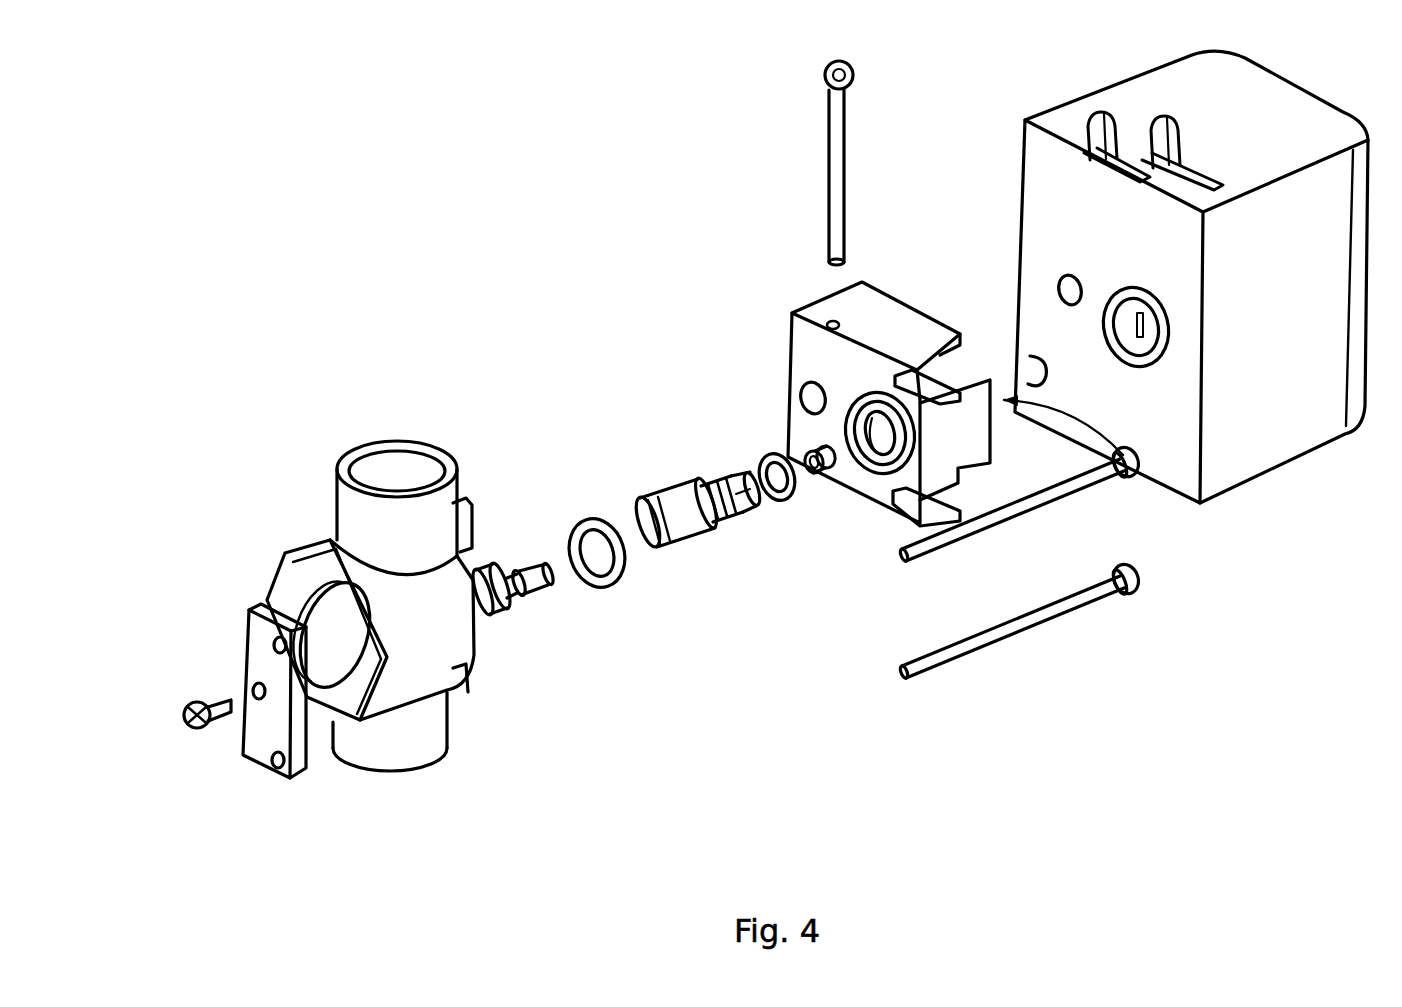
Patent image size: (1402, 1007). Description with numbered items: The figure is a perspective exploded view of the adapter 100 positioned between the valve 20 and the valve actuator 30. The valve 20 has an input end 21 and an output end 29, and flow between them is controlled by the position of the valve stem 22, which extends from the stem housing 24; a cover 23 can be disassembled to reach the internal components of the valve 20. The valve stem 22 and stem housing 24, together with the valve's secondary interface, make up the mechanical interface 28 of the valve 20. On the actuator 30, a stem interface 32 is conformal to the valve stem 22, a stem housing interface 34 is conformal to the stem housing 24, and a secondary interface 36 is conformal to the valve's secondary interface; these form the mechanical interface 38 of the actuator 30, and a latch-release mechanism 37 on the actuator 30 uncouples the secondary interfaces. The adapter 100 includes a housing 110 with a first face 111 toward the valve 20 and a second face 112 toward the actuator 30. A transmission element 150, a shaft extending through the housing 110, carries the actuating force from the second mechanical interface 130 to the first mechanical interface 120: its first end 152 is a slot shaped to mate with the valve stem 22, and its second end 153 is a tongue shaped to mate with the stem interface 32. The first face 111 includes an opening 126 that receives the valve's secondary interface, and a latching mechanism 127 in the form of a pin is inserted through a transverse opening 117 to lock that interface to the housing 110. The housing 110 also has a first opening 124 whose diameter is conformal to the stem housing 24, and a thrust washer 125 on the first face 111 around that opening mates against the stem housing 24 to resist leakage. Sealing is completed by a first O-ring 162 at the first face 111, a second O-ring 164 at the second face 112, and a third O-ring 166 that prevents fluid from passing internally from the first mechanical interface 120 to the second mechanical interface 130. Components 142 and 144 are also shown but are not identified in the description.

The valve 20 is at (412, 594).
The input end 21 is at (432, 769).
The valve stem 22 is at (550, 594).
The cover 23 is at (283, 574).
The stem housing 24 is at (518, 596).
The mechanical interface 28 is at (506, 491).
The output end 29 is at (380, 464).
The actuator 30 is at (1285, 440).
The stem interface 32 is at (1133, 318).
The stem housing interface 34 is at (1148, 349).
The secondary interface 36 is at (1057, 289).
The latch-release mechanism 37 is at (1085, 132).
The mechanical interface 38 is at (1040, 250).
The adapter 100 is at (1003, 720).
The housing 110 is at (851, 321).
The first face 111 is at (827, 319).
The second face 112 is at (937, 305).
The opening 117 is at (815, 341).
The first mechanical interface 120 is at (840, 500).
The first opening 124 is at (884, 455).
The thrust washer 125 is at (888, 478).
The opening 126 is at (799, 378).
The latching mechanism 127 is at (823, 205).
The second mechanical interface 130 is at (1132, 477).
The fastener 142 is at (903, 682).
The mounting bracket 144 is at (279, 706).
The transmission element 150 is at (686, 470).
The first end 152 is at (656, 491).
The second end 153 is at (742, 471).
The first O-ring 162 is at (616, 590).
The second O-ring 164 is at (796, 451).
The third O-ring 166 is at (776, 503).